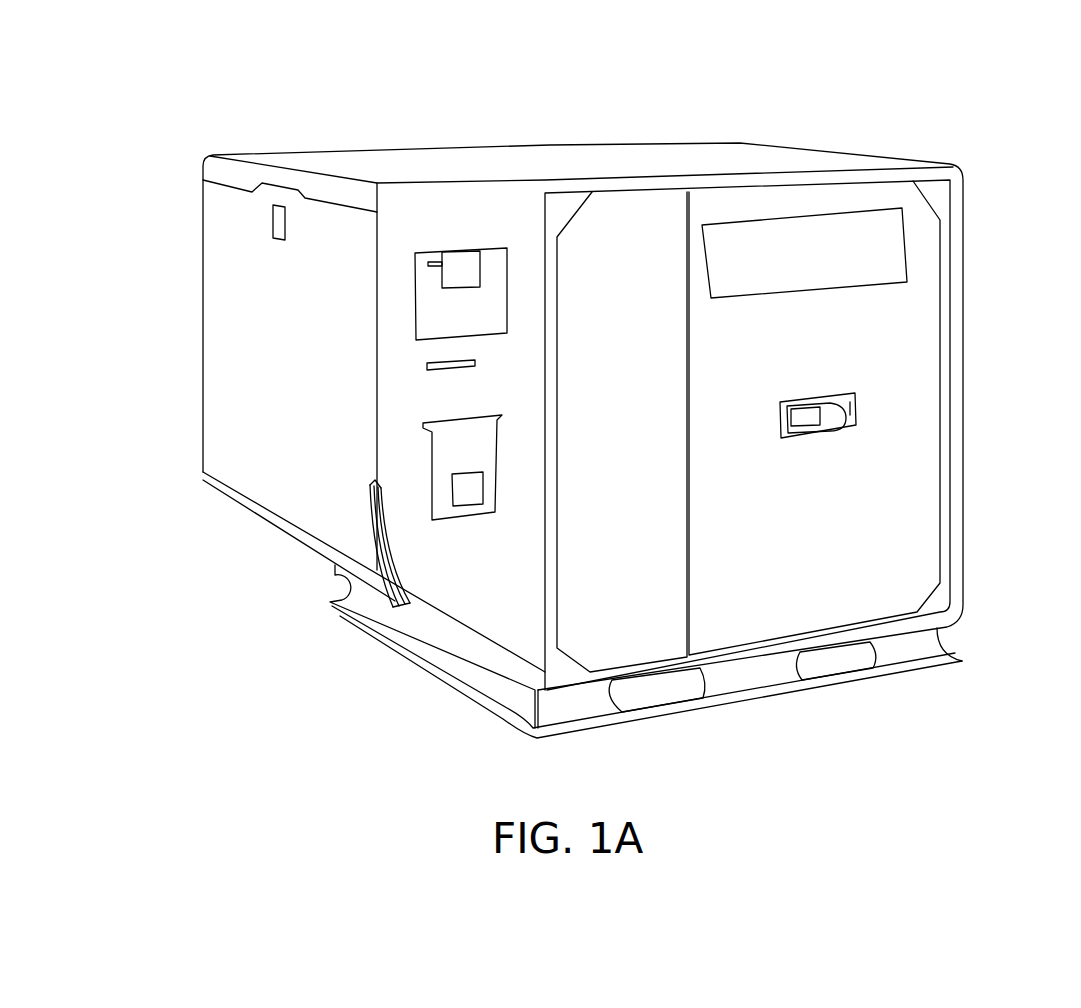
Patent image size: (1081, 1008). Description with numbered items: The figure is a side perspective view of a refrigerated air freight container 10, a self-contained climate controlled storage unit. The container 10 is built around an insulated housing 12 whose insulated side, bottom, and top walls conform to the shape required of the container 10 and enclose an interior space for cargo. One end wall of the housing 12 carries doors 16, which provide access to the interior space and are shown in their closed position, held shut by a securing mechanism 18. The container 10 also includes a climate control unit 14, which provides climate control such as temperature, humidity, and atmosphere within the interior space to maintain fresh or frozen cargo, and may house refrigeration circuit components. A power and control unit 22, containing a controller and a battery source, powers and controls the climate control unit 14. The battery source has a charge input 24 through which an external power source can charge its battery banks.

The refrigerated air freight container 10 is at (985, 113).
The insulated housing 12 is at (932, 348).
The climate control unit 14 is at (248, 348).
The doors 16 is at (888, 509).
The securing mechanism 18 is at (857, 417).
The power and control unit 22 is at (465, 437).
The charge input 24 is at (451, 487).